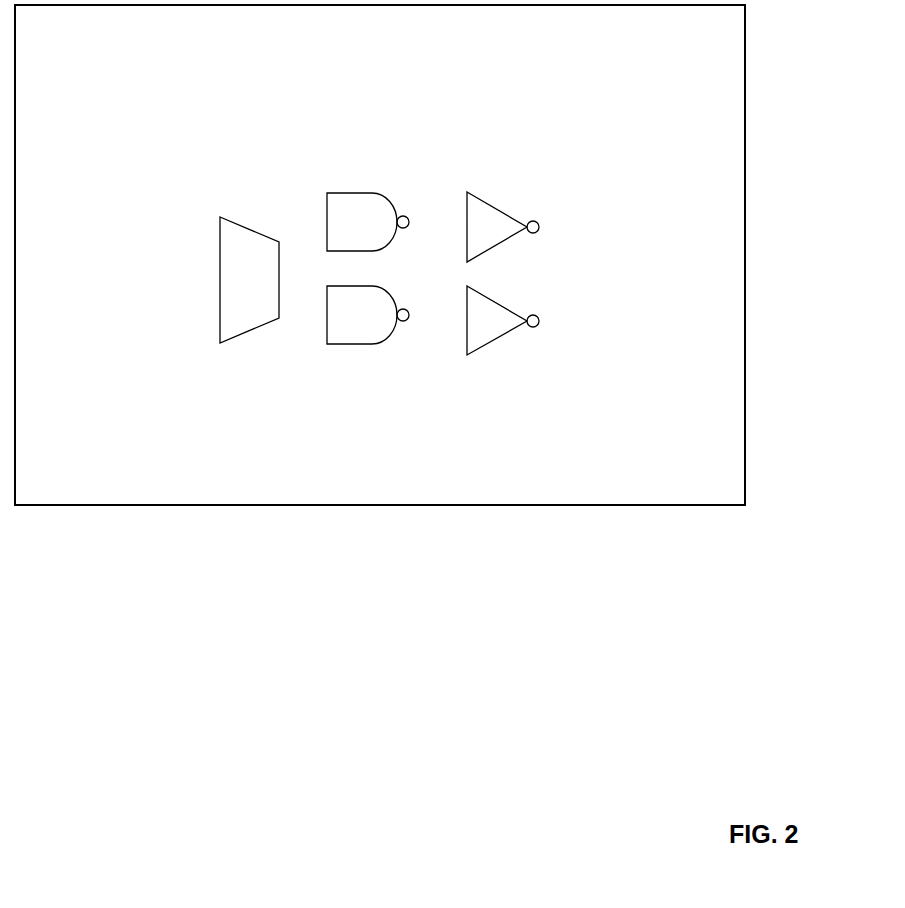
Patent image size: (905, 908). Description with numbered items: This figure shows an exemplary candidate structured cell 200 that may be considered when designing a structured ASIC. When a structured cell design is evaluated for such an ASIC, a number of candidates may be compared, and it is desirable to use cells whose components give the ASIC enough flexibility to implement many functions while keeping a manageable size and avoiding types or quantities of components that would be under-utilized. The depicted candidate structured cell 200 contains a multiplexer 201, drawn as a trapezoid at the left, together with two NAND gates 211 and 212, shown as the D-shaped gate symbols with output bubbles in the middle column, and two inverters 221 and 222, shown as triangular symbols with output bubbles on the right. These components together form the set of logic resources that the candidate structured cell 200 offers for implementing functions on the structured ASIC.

The candidate structured cell 200 is at (110, 108).
The multiplexer 201 is at (227, 331).
The NAND gate 211 is at (346, 200).
The NAND gate 212 is at (340, 335).
The inverter 221 is at (478, 210).
The inverter 222 is at (482, 333).